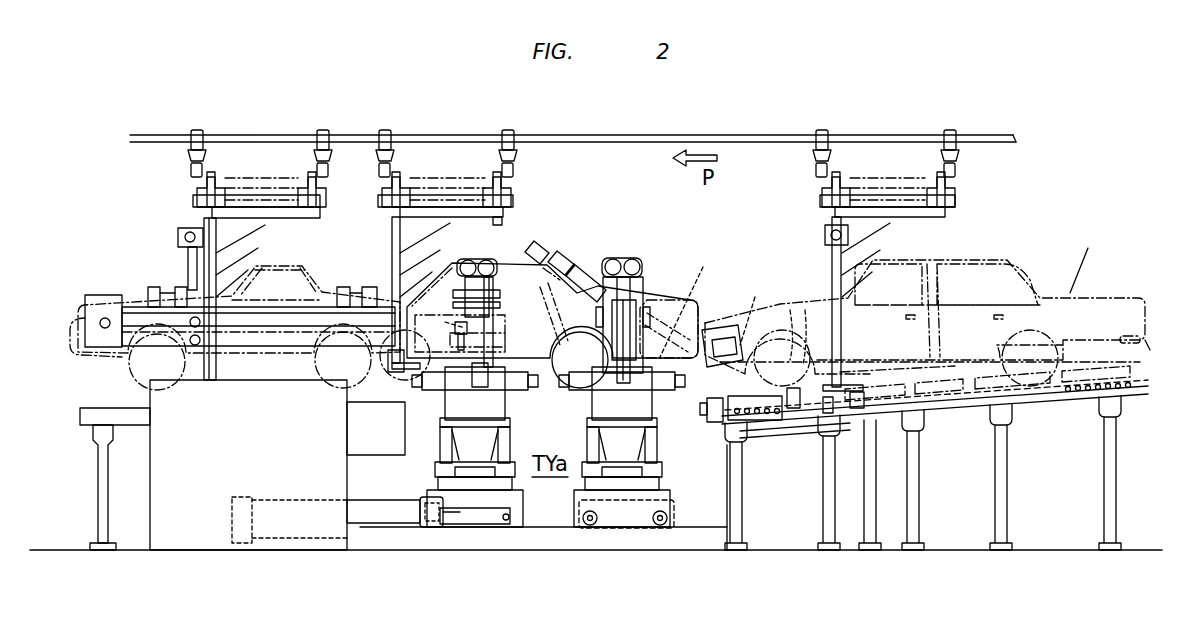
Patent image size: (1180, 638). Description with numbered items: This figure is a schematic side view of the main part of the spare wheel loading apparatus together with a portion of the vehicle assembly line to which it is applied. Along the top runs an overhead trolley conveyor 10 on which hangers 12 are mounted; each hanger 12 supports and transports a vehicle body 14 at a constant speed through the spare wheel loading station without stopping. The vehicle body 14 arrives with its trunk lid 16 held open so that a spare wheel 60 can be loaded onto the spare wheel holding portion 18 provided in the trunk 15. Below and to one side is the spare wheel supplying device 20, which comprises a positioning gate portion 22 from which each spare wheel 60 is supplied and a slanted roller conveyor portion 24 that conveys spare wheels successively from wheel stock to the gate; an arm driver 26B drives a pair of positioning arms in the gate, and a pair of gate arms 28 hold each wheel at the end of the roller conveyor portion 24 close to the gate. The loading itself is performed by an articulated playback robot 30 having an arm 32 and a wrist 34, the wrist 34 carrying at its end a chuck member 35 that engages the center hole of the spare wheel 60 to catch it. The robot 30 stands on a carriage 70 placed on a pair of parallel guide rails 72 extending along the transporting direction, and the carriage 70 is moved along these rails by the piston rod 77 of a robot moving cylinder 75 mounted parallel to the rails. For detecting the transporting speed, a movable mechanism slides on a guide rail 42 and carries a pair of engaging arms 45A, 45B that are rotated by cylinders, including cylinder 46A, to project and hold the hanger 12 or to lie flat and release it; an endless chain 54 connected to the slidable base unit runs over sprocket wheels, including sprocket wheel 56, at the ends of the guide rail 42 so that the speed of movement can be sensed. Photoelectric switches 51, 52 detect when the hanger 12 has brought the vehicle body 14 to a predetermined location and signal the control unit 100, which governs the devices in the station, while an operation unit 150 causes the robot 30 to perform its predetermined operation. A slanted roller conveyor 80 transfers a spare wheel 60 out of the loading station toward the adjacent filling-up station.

The trolley conveyor 10 is at (763, 133).
The hanger 12 is at (205, 213).
The vehicle body 14 is at (288, 265).
The trunk 15 is at (500, 322).
The trunk lid 16 is at (450, 256).
The spare wheel holding portion 18 is at (1153, 355).
The spare wheel supplying device 20 is at (941, 426).
The positioning gate portion 22 is at (707, 404).
The roller conveyor portion 24 is at (1053, 408).
The arm driver 26B is at (771, 421).
The gate arms 28 is at (805, 310).
The robot 30 is at (519, 403).
The arm 32 is at (655, 310).
The wrist 34 is at (740, 330).
The chuck member 35 is at (762, 276).
The guide rail 42 is at (129, 300).
The engaging arm 45A is at (373, 285).
The engaging arm 45B is at (385, 253).
The cylinder 46A is at (348, 290).
The photoelectric switch 51 is at (825, 236).
The photoelectric switch 52 is at (178, 237).
The endless chain 54 is at (225, 316).
The sprocket wheel 56 is at (102, 303).
The spare wheel 60 is at (505, 325).
The carriage 70 is at (570, 495).
The guide rails 72 is at (465, 547).
The robot moving cylinder 75 is at (368, 512).
The piston rod 77 is at (494, 522).
The roller conveyor 80 is at (113, 410).
The control unit 100 is at (152, 466).
The operation unit 150 is at (395, 456).